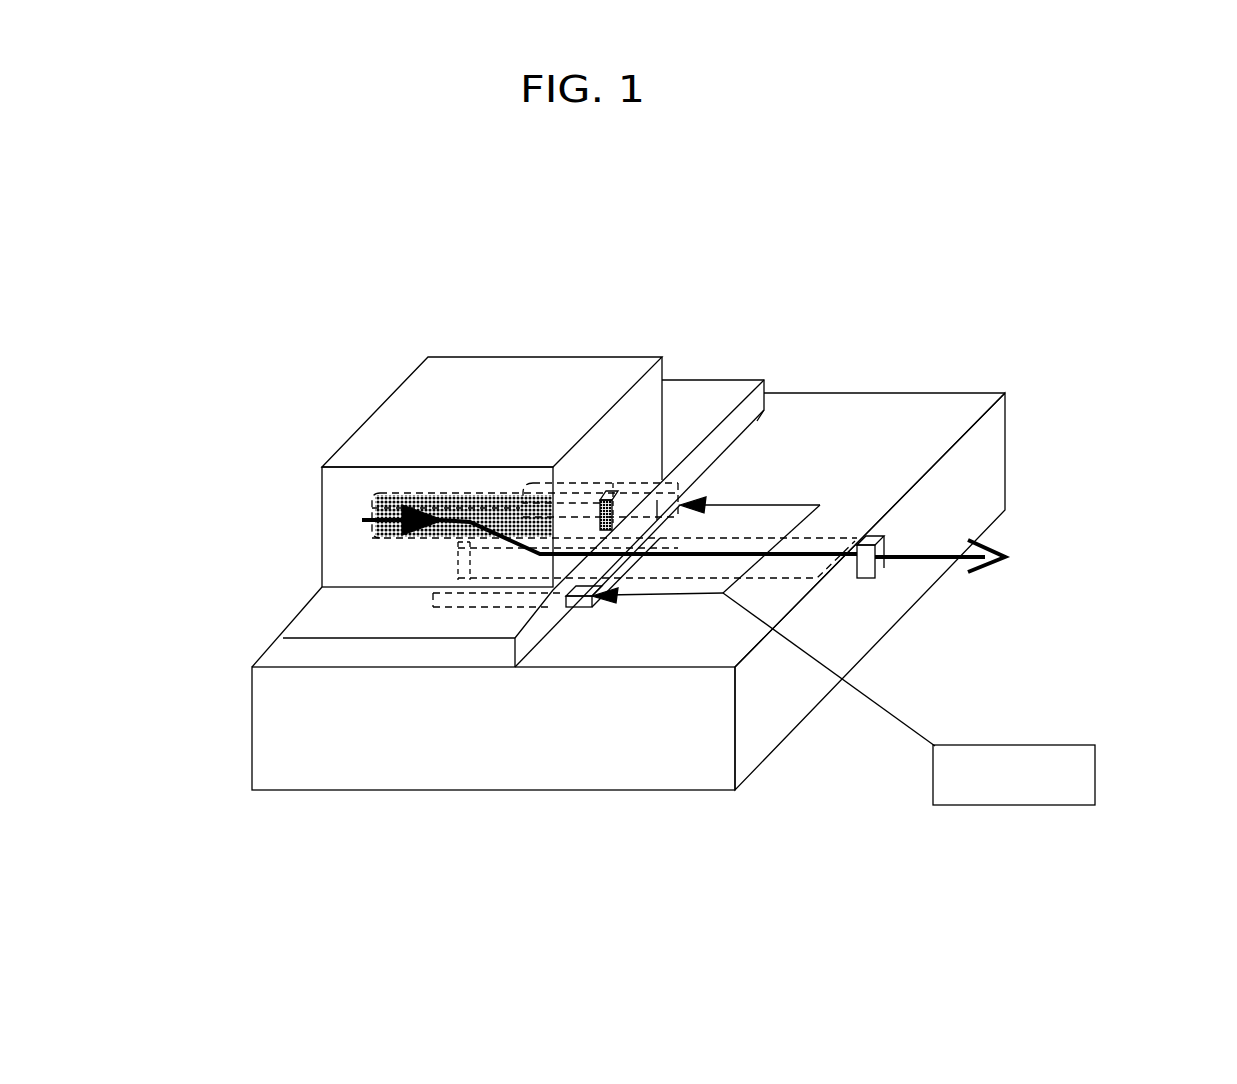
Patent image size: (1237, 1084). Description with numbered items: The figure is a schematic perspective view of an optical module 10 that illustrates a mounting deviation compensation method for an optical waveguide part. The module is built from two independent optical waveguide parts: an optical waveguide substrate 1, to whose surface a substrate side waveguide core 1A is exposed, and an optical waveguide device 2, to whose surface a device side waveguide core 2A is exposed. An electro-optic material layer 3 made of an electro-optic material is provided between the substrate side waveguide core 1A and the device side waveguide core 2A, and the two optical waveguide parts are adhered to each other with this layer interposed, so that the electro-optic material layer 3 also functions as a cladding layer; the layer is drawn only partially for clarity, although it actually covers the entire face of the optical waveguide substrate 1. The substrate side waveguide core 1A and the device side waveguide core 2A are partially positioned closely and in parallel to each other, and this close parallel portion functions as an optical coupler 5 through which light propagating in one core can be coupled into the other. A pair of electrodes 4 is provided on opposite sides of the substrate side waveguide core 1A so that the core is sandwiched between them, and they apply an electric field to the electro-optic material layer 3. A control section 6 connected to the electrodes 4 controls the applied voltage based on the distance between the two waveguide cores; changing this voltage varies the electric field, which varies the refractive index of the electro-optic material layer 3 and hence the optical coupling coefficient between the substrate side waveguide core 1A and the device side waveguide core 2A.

The optical waveguide substrate 1 is at (628, 591).
The substrate side waveguide core 1A is at (845, 575).
The optical waveguide device 2 is at (405, 396).
The device side waveguide core 2A is at (383, 503).
The electro-optic material layer 3 is at (670, 428).
The electrodes 4 is at (697, 463).
The optical coupler 5 is at (437, 549).
The control section 6 is at (985, 805).
The optical module 10 is at (318, 845).